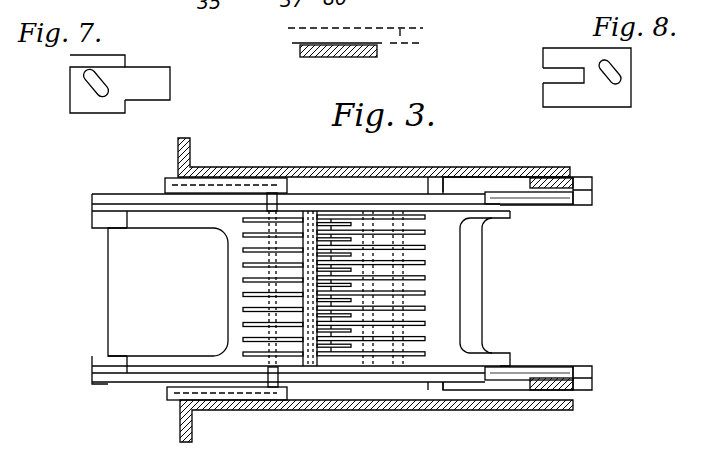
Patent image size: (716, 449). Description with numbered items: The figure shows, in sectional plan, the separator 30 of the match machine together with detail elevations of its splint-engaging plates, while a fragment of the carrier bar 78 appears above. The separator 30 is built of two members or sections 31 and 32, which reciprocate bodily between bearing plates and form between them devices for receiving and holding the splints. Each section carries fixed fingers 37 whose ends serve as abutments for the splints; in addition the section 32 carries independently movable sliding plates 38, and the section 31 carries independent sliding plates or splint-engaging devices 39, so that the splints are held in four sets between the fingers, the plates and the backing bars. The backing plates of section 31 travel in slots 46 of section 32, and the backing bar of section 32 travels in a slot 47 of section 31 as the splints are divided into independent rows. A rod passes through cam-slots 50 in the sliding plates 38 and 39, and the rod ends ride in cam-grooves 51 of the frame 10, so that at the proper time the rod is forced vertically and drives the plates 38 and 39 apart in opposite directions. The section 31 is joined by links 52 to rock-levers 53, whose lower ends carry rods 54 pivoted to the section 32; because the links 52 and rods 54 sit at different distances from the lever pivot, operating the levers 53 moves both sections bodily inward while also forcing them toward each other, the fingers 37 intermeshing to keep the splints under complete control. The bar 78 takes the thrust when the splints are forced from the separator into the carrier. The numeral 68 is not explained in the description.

In FIG. 3, the frame 10 is at (398, 166).
In FIG. 3, the separator 30 is at (286, 283).
In FIG. 3, the member or section of the separator 31 is at (483, 270).
In FIG. 3, the member or section of the separator 32 is at (127, 302).
In FIG. 3, the fixed fingers 37 is at (351, 268).
In FIG. 7, the sliding plates 38 is at (88, 103).
In FIG. 3, the sliding plates 38 is at (243, 299).
In FIG. 8, the sliding plates or splint-engaging devices 39 is at (593, 98).
In FIG. 3, the sliding plates or splint-engaging devices 39 is at (426, 269).
In FIG. 7, the slots 46 is at (131, 66).
In FIG. 8, the slot 47 is at (551, 74).
In FIG. 7, the cam-slots 50 is at (88, 78).
In FIG. 8, the cam-slots 50 is at (617, 73).
In FIG. 3, the cam-grooves 51 is at (224, 185).
In FIG. 3, the links 52 is at (533, 204).
In FIG. 3, the rock-levers 53 is at (593, 181).
In FIG. 3, the rods 54 is at (137, 192).
In FIG. 3, the line 68 is at (405, 20).
In FIG. 3, the bar 78 is at (377, 56).